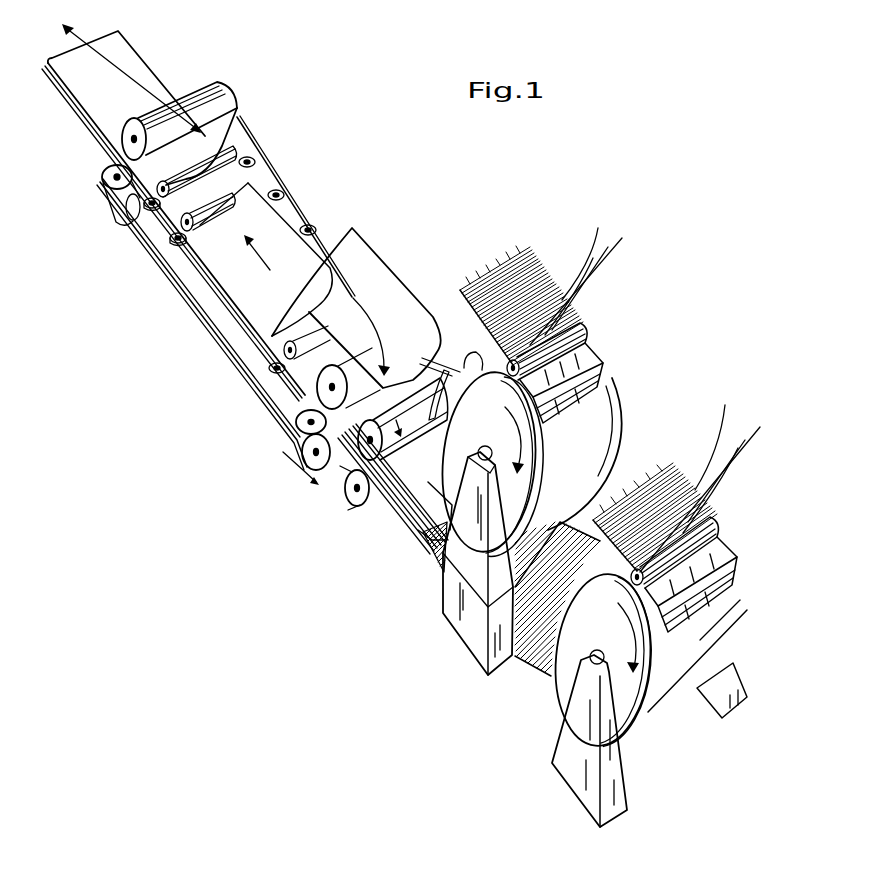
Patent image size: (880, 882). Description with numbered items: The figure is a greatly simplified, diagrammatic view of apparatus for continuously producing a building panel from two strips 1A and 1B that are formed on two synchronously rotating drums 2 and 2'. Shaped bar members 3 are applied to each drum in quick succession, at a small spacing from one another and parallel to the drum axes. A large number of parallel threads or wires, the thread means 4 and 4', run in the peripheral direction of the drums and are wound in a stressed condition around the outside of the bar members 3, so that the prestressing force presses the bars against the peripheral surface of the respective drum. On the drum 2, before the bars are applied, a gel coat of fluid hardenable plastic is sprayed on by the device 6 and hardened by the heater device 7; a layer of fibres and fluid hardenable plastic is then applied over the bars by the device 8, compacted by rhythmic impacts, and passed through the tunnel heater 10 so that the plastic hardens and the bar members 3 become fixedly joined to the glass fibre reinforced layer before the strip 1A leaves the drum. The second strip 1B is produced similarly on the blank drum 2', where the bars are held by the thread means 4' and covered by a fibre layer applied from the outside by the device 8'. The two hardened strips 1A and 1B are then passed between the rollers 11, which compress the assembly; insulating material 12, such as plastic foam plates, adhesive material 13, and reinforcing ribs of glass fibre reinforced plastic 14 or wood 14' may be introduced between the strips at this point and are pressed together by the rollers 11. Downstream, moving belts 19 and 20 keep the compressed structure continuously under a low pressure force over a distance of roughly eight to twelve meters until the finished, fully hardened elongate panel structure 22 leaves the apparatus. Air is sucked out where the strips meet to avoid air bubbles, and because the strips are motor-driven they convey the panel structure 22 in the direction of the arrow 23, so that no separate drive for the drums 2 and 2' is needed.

The strip 1A is at (428, 483).
The strip 1B is at (542, 647).
The drum 2 is at (502, 464).
The drum 2' is at (593, 629).
The shaped bar members 3 is at (527, 248).
The thread means 4 is at (576, 274).
The thread means 4' is at (700, 485).
The spraying device 6 is at (428, 484).
The heater device 7 is at (449, 397).
The layer applying device 8 is at (457, 321).
The layer applying device 8' is at (633, 477).
The tunnel heater 10 is at (585, 450).
The rollers 11 is at (347, 470).
The insulating material 12 is at (434, 545).
The adhesive material 13 is at (395, 487).
The reinforcing rib of glass fibre reinforced plastic 14 is at (467, 560).
The reinforcing rib of wood 14' is at (408, 568).
The moving belt 19 is at (178, 246).
The moving belt 20 is at (298, 447).
The elongate panel structure 22 is at (103, 82).
The arrow 23 is at (122, 78).